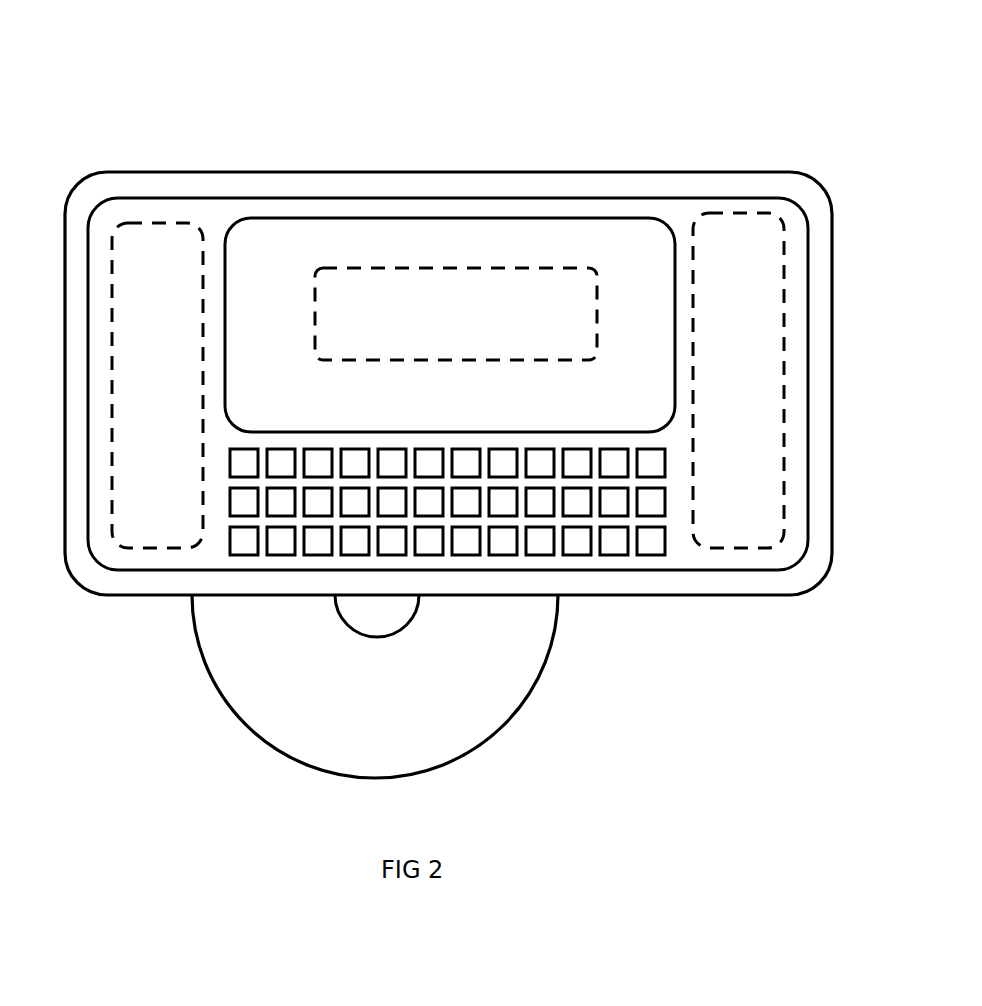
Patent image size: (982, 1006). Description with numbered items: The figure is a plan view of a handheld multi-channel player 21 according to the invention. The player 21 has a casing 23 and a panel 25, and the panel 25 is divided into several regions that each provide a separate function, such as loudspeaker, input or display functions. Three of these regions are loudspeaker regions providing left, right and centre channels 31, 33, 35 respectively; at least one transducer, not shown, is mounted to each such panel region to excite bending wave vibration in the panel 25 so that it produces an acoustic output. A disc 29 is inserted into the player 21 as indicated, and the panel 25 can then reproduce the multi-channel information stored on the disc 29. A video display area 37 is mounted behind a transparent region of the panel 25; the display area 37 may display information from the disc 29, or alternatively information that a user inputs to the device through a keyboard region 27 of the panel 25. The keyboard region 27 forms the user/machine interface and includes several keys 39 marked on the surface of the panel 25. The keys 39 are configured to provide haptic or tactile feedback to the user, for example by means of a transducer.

The handheld multi-channel player 21 is at (706, 828).
The casing 23 is at (592, 178).
The panel 25 is at (682, 552).
The keyboard region 27 is at (465, 497).
The disc 29 is at (258, 673).
The left channel loudspeaker region 31 is at (152, 513).
The right channel loudspeaker region 33 is at (748, 262).
The centre channel loudspeaker region 35 is at (448, 298).
The video display area 37 is at (260, 248).
The keys 39 is at (572, 542).